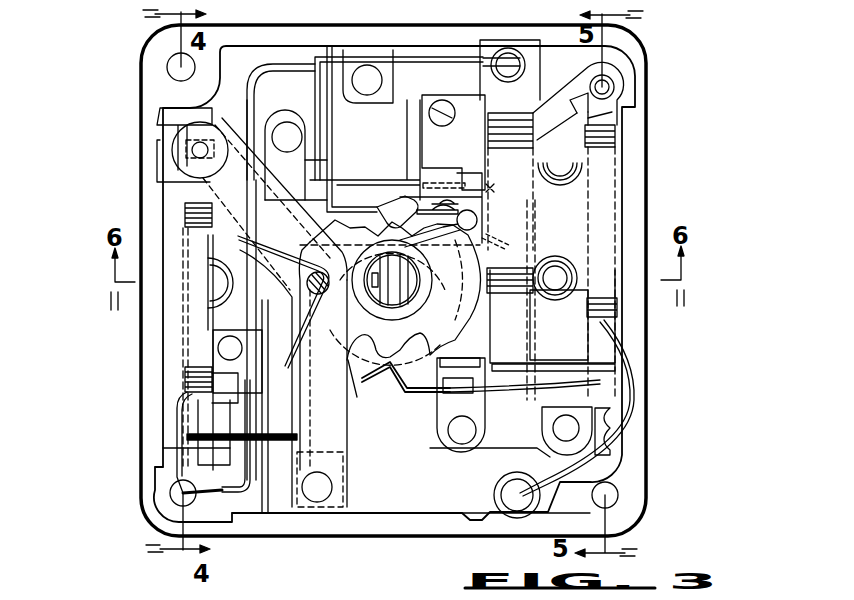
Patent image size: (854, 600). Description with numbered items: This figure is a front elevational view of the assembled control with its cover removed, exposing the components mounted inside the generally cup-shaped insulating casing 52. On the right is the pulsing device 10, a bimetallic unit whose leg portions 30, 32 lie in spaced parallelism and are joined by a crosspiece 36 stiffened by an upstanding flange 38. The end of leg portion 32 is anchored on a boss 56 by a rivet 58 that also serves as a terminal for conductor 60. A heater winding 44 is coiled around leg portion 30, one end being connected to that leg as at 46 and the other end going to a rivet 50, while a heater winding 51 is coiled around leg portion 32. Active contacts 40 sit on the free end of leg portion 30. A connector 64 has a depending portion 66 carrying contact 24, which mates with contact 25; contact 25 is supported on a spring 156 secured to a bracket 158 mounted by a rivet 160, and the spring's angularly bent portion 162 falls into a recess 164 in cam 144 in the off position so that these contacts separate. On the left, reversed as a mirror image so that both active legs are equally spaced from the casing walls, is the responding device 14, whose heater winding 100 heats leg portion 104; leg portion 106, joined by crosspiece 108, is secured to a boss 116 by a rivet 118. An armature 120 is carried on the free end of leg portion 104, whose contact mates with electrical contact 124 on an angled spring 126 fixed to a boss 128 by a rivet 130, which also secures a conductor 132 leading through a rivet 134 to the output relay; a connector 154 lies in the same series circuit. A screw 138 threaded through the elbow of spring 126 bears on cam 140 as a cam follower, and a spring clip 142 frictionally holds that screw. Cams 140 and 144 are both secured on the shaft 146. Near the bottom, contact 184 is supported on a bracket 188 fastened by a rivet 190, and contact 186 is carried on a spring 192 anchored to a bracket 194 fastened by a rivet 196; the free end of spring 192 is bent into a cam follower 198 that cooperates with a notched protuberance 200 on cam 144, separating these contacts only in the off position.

The pulsing device 10 is at (620, 180).
The responding device 14 is at (170, 366).
The contact 24 is at (504, 193).
The contact 25 is at (483, 205).
The leg portion 30 is at (602, 328).
The leg portion 32 is at (532, 308).
The crosspiece 36 is at (572, 353).
The upstanding flange 38 is at (593, 373).
The active contacts 40 is at (612, 75).
The heater winding 44 is at (617, 140).
The connection 46 is at (612, 116).
The rivet 50 is at (517, 497).
The heater winding 51 is at (537, 133).
The insulating casing 52 is at (660, 440).
The boss 56 is at (585, 50).
The rivet 58 is at (520, 65).
The conductor 60 is at (483, 62).
The connector 64 is at (615, 98).
The depending portion 66 is at (417, 180).
The heater winding 100 is at (185, 378).
The leg portion 104 is at (198, 398).
The leg portion 106 is at (300, 160).
The crosspiece 108 is at (207, 423).
The boss 116 is at (308, 80).
The rivet 118 is at (285, 112).
The armature 120 is at (157, 140).
The electrical contact 124 is at (190, 124).
The angled spring 126 is at (328, 438).
The boss 128 is at (390, 498).
The rivet 130 is at (320, 495).
The conductor 132 is at (255, 495).
The rivet 134 is at (210, 345).
The screw 138 is at (310, 272).
The cam 140 is at (440, 312).
The spring clip 142 is at (303, 332).
The cam 144 is at (423, 333).
The shaft 146 is at (483, 230).
The connector 154 is at (327, 190).
The spring 156 is at (348, 207).
The bracket 158 is at (327, 112).
The rivet 160 is at (370, 65).
The angularly bent portion 162 is at (396, 208).
The recess 164 is at (377, 203).
The contact 184 is at (490, 363).
The contact 186 is at (482, 392).
The bracket 188 is at (473, 410).
The rivet 190 is at (467, 440).
The spring 192 is at (600, 397).
The bracket 194 is at (610, 432).
The rivet 196 is at (587, 457).
The cam follower 198 is at (380, 377).
The notched protuberance 200 is at (357, 392).